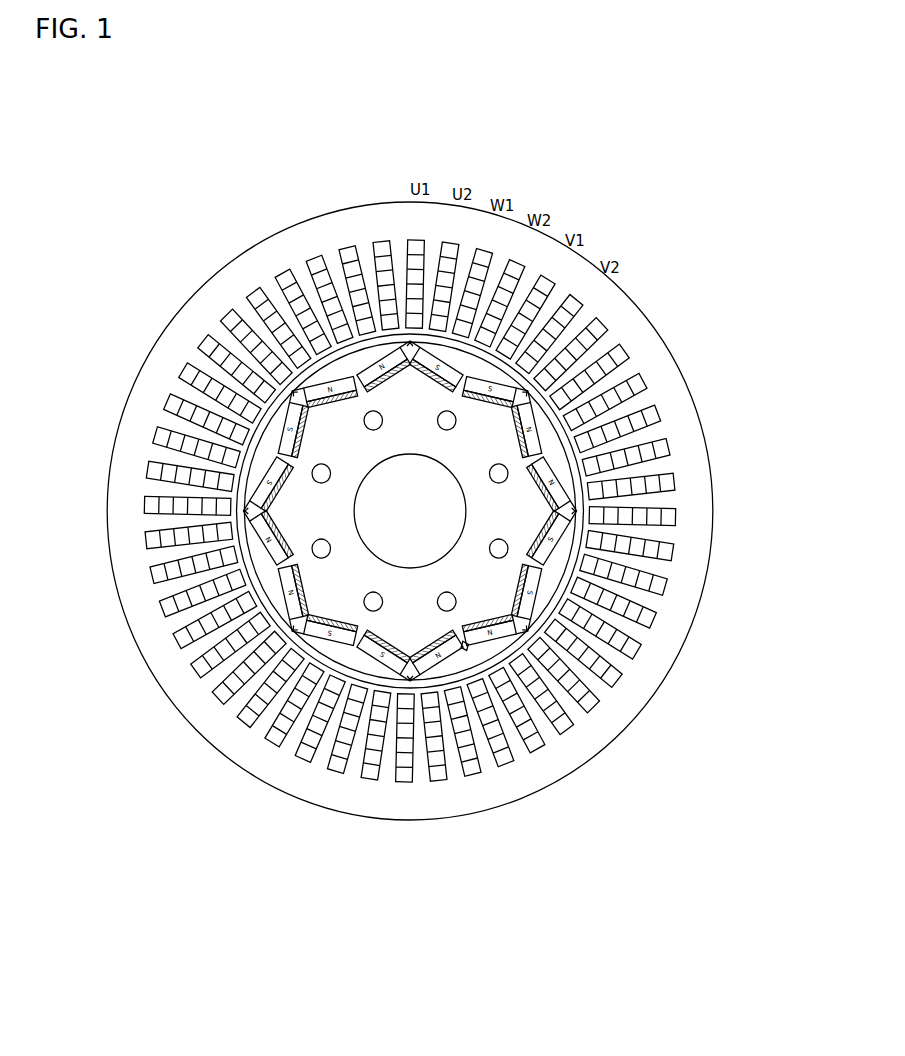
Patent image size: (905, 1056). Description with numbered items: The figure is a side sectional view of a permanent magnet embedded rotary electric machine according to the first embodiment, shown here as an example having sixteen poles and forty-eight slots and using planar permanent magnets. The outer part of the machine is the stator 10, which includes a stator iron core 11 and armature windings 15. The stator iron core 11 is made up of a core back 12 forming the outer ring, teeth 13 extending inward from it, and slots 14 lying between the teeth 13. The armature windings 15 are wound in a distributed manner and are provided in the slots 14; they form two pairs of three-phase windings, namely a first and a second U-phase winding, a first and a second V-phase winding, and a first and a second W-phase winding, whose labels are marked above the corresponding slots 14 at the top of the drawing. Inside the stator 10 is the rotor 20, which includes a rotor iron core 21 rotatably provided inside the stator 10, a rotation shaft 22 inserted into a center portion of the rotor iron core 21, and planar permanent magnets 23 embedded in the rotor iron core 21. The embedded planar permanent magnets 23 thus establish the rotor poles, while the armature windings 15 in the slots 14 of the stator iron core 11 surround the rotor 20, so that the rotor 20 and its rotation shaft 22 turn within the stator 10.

The stator 10 is at (291, 240).
The stator iron core 11 is at (642, 337).
The core back 12 is at (670, 407).
The teeth 13 is at (650, 470).
The slots 14 is at (665, 518).
The armature windings 15 is at (670, 549).
The rotor 20 is at (272, 652).
The rotor iron core 21 is at (378, 665).
The rotation shaft 22 is at (378, 532).
The planar permanent magnets 23 is at (453, 648).